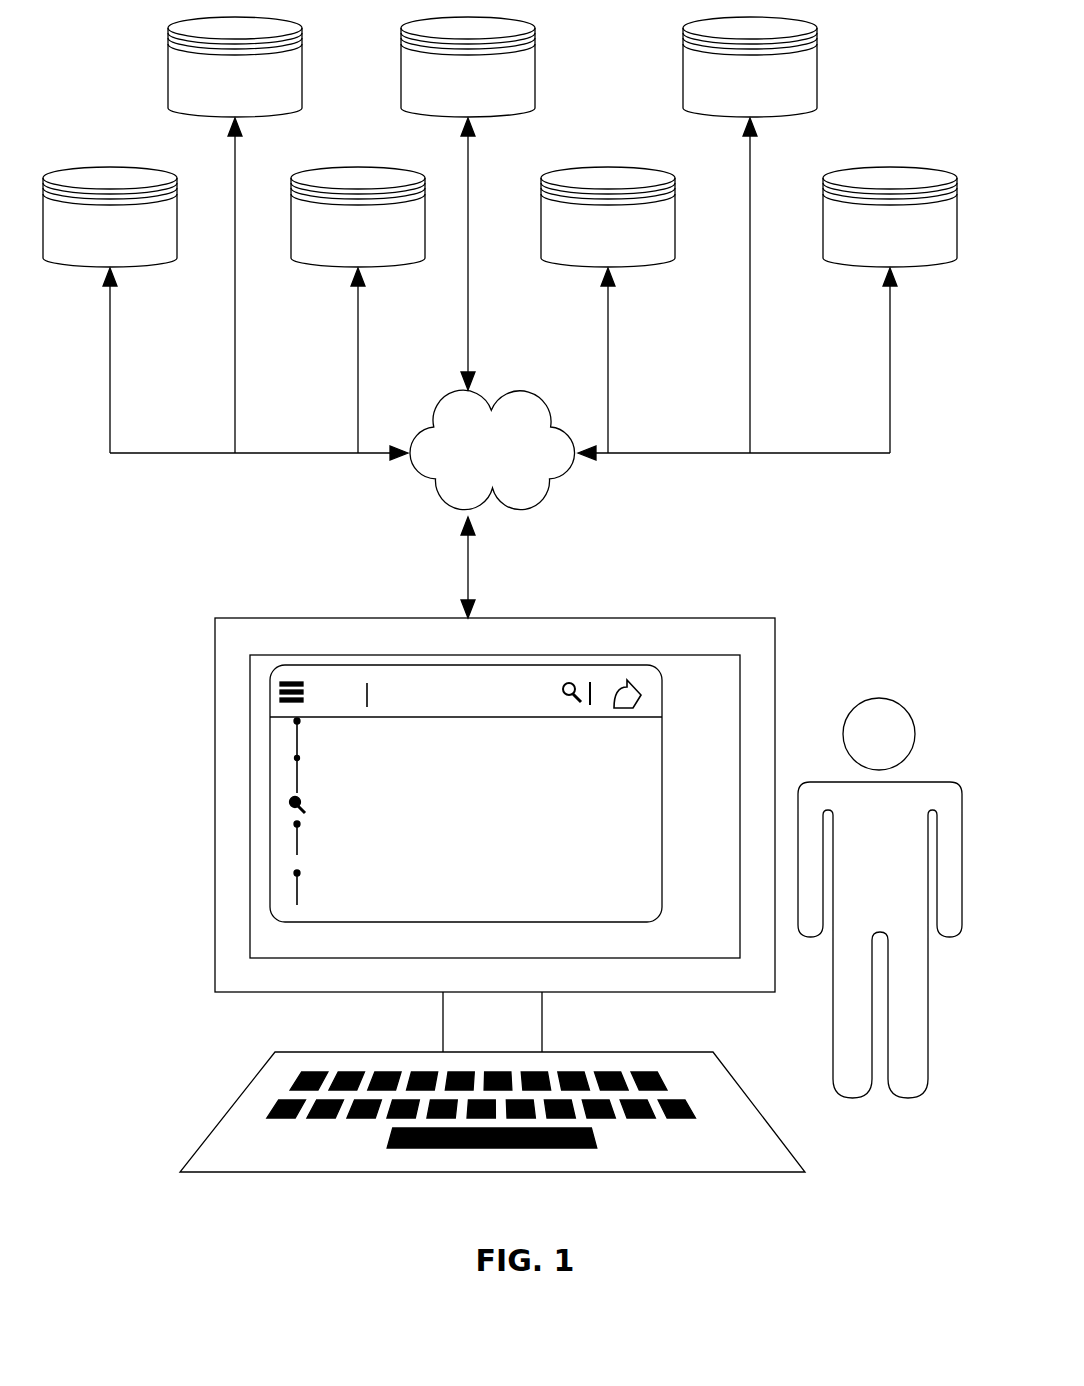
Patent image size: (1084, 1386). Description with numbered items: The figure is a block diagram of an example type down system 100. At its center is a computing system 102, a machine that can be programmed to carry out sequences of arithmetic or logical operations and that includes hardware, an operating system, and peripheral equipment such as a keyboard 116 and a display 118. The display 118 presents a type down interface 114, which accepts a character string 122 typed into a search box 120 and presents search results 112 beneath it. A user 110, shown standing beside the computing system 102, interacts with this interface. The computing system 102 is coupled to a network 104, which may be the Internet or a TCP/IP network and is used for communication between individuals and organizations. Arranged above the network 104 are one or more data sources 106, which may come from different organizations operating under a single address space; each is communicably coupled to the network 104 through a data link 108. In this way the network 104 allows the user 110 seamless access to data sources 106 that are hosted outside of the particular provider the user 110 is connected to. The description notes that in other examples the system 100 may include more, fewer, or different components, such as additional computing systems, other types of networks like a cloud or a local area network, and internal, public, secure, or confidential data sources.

The type down system 100 is at (107, 1180).
The computing system 102 is at (225, 618).
The network 104 is at (479, 474).
The data sources 106 is at (500, 142).
The data links 108 is at (110, 405).
The user 110 is at (873, 698).
The search results 112 is at (289, 721).
The type down interface 114 is at (538, 665).
The keyboard 116 is at (275, 1052).
The display 118 is at (710, 618).
The search box 120 is at (416, 668).
The character string 122 is at (333, 680).